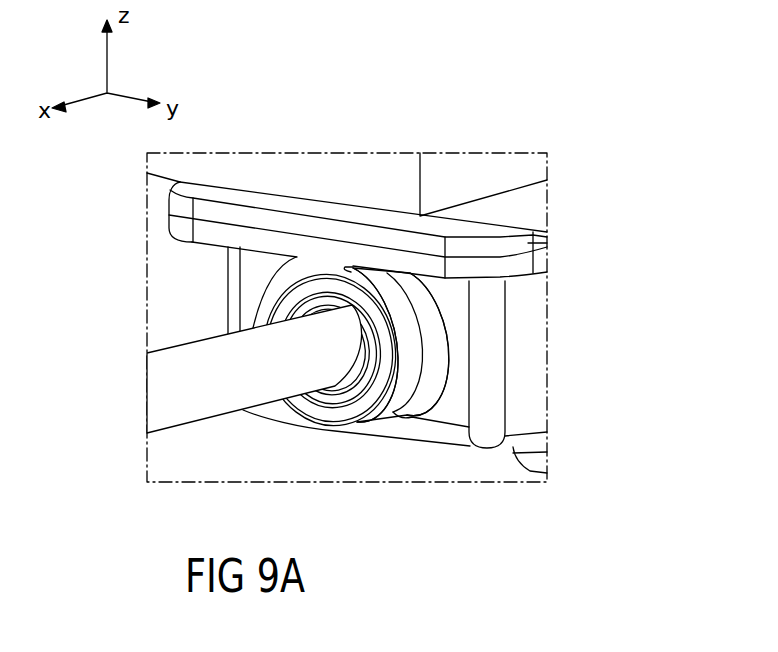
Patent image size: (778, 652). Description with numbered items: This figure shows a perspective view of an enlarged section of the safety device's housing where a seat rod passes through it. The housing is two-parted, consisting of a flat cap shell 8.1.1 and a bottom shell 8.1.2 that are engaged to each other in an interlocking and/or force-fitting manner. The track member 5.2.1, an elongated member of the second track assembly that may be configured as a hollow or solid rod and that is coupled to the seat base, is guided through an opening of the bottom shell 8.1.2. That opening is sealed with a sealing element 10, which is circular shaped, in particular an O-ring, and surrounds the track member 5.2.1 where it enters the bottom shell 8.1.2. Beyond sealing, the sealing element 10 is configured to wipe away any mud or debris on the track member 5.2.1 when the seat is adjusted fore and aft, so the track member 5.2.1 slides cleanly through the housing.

The cap shell 8.1.1 is at (547, 238).
The bottom shell 8.1.2 is at (527, 375).
The track member 5.2.1 is at (165, 383).
The sealing element 10 is at (338, 393).